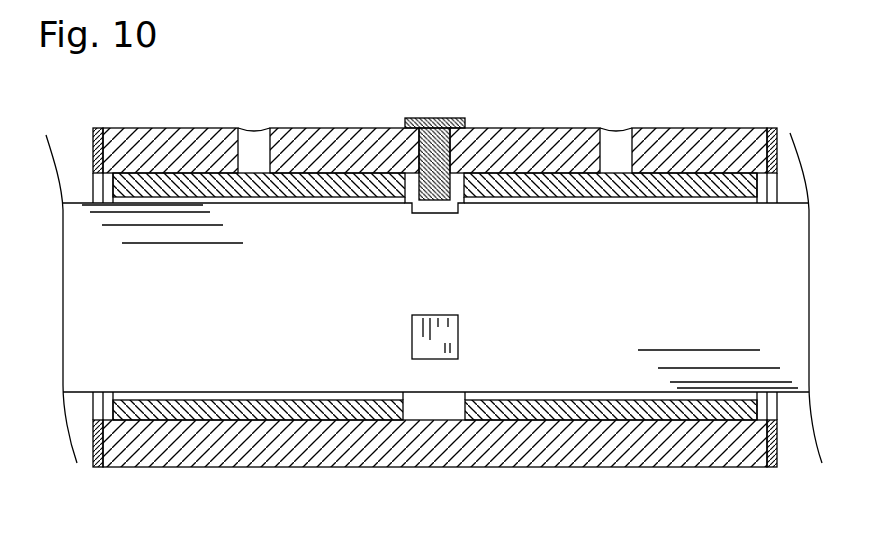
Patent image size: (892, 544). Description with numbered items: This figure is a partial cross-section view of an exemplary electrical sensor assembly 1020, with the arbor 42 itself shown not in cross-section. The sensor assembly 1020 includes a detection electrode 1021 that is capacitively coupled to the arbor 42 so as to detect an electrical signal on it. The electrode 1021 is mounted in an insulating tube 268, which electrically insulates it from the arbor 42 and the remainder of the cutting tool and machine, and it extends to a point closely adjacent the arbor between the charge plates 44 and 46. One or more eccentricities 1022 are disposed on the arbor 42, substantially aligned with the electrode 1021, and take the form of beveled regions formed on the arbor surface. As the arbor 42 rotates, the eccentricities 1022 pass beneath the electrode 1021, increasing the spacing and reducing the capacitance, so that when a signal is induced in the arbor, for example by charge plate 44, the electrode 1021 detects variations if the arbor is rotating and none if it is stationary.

The arbor 42 is at (755, 300).
The insulating tube 268 is at (290, 133).
The detection electrode 1021 is at (428, 118).
The eccentricities 1022 is at (438, 213).
The charge plate 44 is at (308, 413).
The charge plate 46 is at (553, 412).
The sensor assembly 1020 is at (527, 87).